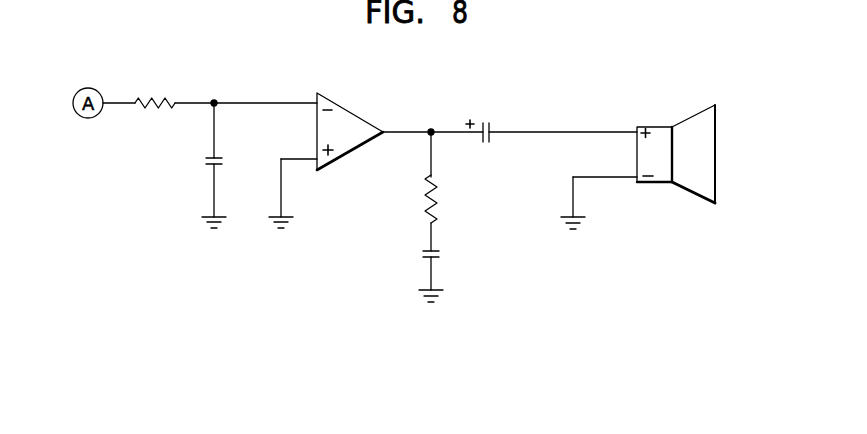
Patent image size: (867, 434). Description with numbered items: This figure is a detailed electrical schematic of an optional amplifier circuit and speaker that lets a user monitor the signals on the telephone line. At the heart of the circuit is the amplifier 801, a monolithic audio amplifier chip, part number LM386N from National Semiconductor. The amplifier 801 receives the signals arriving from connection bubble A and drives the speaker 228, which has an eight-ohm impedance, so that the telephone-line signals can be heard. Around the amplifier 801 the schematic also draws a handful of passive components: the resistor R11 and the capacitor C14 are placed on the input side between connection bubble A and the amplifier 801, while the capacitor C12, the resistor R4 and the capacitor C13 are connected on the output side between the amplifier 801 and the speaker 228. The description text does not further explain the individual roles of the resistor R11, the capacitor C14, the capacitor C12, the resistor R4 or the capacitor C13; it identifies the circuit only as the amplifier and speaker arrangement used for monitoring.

The amplifier 801 is at (352, 152).
The speaker 228 is at (688, 118).
The resistor R11 47K R11 is at (155, 77).
The capacitor C14 4700pF C14 is at (169, 165).
The capacitor C12 300uf C12 is at (497, 109).
The resistor R4 10 ohm R4 is at (455, 199).
The capacitor C13 .047uf C13 is at (460, 262).